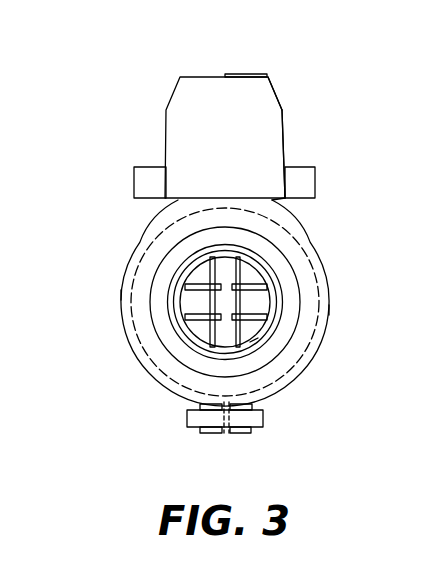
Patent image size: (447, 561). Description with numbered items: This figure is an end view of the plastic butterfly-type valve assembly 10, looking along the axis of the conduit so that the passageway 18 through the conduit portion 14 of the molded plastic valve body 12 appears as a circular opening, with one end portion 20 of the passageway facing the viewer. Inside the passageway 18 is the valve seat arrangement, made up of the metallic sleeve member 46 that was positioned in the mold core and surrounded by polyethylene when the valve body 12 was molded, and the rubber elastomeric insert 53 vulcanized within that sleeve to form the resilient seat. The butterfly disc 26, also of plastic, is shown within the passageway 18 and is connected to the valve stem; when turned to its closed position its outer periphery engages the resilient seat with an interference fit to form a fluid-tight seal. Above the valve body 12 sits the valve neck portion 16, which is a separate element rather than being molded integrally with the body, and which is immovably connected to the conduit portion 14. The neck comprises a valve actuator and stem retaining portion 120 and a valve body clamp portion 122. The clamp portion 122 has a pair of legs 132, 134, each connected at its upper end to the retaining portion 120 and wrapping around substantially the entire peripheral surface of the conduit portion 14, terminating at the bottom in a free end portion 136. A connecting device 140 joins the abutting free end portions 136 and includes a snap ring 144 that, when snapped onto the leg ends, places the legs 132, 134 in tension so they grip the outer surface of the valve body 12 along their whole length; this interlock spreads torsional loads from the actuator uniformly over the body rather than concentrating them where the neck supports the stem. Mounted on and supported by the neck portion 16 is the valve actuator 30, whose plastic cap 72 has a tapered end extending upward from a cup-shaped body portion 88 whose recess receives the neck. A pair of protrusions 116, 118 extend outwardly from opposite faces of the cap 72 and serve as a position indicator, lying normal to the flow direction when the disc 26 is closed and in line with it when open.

The valve assembly 10 is at (152, 96).
The cap 72 is at (205, 77).
The cup-shaped body portion 88 is at (277, 112).
The valve actuator 30 is at (290, 125).
The protrusion 116 is at (135, 167).
The protrusion 118 is at (315, 167).
The valve neck portion 16 is at (146, 217).
The valve actuator and stem retaining portion 120 is at (290, 206).
The valve body clamp portion 122 is at (328, 238).
The leg 132 is at (124, 285).
The leg 134 is at (326, 313).
The valve body 12 is at (173, 235).
The conduit portion 14 is at (160, 312).
The end portion 20 is at (192, 262).
The passageway 18 is at (268, 268).
The metallic sleeve member 46 is at (256, 345).
The butterfly disc 26 is at (253, 330).
The elastomeric insert 53 is at (270, 294).
The connecting device 140 is at (180, 415).
The snap ring 144 is at (264, 418).
The free end portion 136 is at (213, 432).